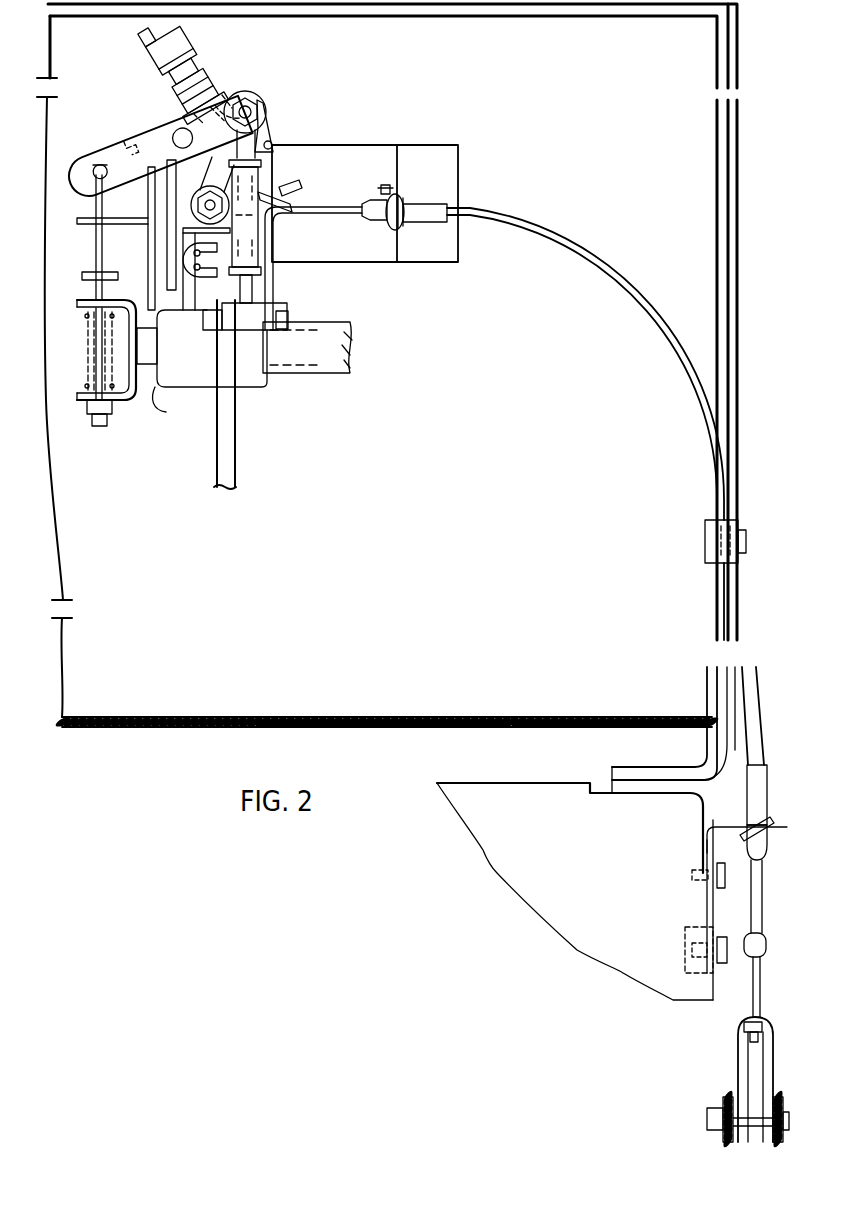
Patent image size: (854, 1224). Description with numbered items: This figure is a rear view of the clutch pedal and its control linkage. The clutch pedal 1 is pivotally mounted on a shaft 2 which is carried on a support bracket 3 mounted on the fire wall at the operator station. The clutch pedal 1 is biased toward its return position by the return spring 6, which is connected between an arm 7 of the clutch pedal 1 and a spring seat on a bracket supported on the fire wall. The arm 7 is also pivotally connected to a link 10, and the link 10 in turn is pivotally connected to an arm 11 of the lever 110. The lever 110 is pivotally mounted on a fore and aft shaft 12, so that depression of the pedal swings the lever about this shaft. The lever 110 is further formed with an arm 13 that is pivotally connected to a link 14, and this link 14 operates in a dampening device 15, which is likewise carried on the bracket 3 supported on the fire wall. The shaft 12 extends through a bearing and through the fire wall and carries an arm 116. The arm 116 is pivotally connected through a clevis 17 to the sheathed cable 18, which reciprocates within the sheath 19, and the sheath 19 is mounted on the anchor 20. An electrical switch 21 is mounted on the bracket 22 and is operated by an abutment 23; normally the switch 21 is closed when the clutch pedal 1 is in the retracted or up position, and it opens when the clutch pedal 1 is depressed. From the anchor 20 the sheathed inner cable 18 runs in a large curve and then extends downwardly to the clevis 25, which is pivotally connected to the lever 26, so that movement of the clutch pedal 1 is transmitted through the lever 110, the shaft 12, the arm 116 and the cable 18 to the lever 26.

The clutch pedal 1 is at (246, 457).
The shaft 2 is at (333, 350).
The support bracket 3 is at (166, 404).
The return spring 6 is at (295, 191).
The arm 7 is at (225, 328).
The link 10 is at (252, 229).
The arm 11 is at (260, 103).
The fore and aft shaft 12 is at (228, 197).
The arm 13 is at (90, 181).
The link 14 is at (96, 244).
The dampening device 15 is at (85, 343).
The clevis 17 is at (143, 232).
The sheathed cable 18 is at (333, 206).
The sheath 19 is at (433, 205).
The anchor 20 is at (400, 230).
The electrical switch 21 is at (134, 73).
The bracket 22 is at (202, 75).
The abutment 23 is at (229, 93).
The clevis 25 is at (742, 1048).
The lever 26 is at (778, 1146).
The lever 110 is at (113, 135).
The arm 116 is at (196, 203).